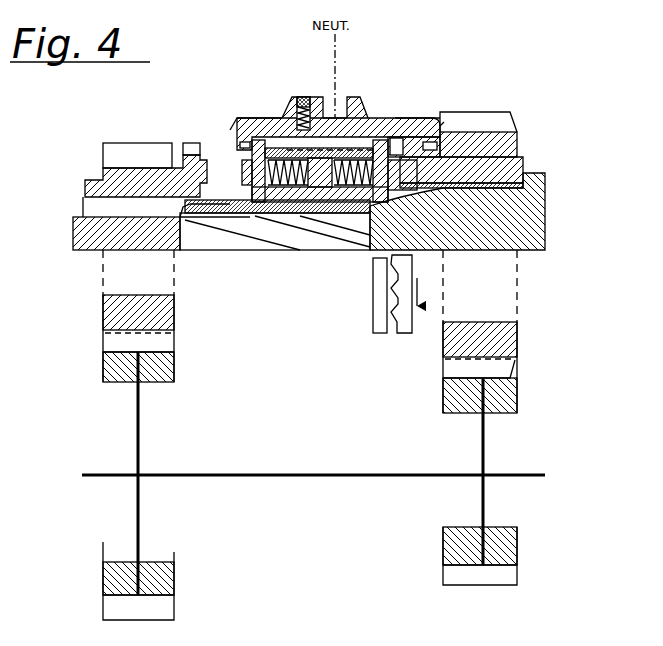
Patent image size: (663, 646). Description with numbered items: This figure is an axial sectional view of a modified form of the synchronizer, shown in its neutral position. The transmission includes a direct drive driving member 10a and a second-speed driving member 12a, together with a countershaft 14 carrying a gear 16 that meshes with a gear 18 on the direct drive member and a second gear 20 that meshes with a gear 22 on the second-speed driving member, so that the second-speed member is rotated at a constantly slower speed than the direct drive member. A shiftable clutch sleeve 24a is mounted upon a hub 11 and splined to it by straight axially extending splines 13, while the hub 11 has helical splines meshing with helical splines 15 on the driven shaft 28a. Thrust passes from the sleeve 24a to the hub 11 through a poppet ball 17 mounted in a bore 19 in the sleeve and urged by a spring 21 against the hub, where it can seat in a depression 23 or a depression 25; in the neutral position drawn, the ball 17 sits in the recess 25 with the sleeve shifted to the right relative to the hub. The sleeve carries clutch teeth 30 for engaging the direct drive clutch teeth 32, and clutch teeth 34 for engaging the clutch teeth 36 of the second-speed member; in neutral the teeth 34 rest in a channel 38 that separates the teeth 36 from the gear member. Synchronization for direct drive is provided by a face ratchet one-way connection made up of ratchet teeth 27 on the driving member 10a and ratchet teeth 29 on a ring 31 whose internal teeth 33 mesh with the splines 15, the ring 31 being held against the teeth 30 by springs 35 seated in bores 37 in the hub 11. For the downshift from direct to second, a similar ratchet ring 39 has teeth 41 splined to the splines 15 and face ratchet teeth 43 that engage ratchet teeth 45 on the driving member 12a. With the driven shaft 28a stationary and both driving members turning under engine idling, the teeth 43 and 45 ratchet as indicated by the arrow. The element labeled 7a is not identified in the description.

The detent spring 7a is at (330, 117).
The driving member 10a is at (87, 188).
The hub 11 is at (320, 213).
The second-speed driving member 12a is at (512, 140).
The straight axially extending splines 13 is at (350, 145).
The countershaft 14 is at (305, 473).
The helical splines 15 is at (228, 214).
The gear 16 is at (108, 367).
The poppet ball 17 is at (280, 124).
The gear 18 is at (108, 143).
The bore 19 is at (290, 104).
The second gear 20 is at (514, 393).
The spring 21 is at (305, 96).
The gear 22 is at (511, 118).
The depression 23 is at (240, 140).
The shiftable clutch sleeve 24a is at (407, 117).
The depression 25 is at (340, 118).
The ratchet teeth 27 is at (250, 162).
The driven shaft 28a is at (546, 212).
The ratchet teeth 29 is at (246, 184).
The clutch teeth 30 is at (236, 148).
The ring 31 is at (248, 206).
The clutch teeth 32 is at (185, 152).
The internal teeth 33 is at (262, 202).
The clutch teeth 34 is at (443, 124).
The springs 35 is at (294, 203).
The clutch teeth 36 is at (433, 141).
The bores 37 is at (306, 213).
The channel 38 is at (518, 157).
The ratchet ring 39 is at (413, 135).
The teeth 41 is at (366, 205).
The face ratchet teeth 43 is at (387, 333).
The ratchet teeth 45 is at (405, 334).